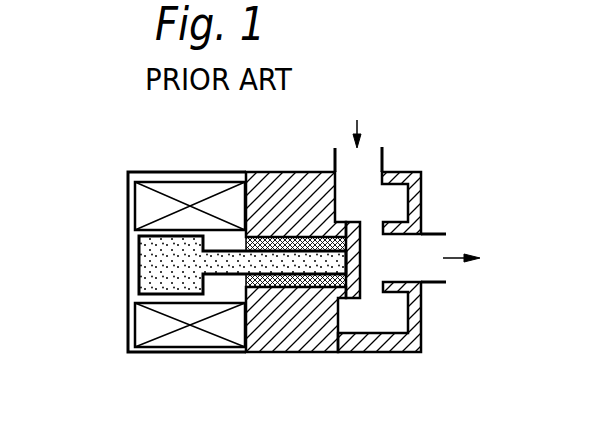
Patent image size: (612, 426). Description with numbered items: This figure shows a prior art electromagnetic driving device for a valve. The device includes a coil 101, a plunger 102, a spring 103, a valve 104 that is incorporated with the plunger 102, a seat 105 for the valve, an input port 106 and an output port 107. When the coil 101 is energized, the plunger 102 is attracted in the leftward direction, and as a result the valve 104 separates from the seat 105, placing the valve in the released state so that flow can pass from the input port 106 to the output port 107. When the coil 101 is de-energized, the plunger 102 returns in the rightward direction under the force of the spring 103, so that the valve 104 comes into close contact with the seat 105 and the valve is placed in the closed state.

The coil 101 is at (190, 334).
The plunger 102 is at (150, 268).
The spring 103 is at (287, 292).
The valve 104 is at (353, 304).
The seat 105 is at (392, 302).
The input port 106 is at (363, 162).
The output port 107 is at (433, 267).